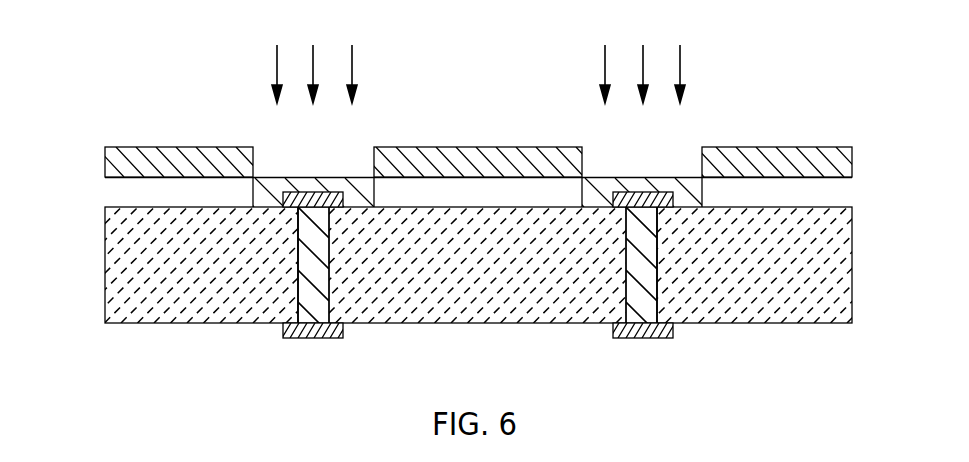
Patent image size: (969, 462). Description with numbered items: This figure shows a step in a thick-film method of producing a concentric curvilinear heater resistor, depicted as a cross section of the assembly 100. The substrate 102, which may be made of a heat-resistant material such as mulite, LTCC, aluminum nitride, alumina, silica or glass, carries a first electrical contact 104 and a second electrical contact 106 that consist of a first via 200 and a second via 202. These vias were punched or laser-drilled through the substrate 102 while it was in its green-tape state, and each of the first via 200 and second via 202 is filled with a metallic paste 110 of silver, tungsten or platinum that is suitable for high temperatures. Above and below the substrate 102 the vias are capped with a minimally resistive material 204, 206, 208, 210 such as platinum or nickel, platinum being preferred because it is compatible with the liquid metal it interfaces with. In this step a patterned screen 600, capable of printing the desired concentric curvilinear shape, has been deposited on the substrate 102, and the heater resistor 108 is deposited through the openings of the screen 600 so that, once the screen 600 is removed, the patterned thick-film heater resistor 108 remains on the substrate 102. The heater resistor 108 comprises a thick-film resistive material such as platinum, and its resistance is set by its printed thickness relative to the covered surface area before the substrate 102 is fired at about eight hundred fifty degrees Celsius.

The electronic device structure 100 is at (199, 105).
The substrate 102 is at (105, 270).
The first electrical contact 104 is at (285, 260).
The second electrical contact 106 is at (670, 276).
The heater resistor 108 is at (360, 178).
The metallic paste 110 is at (314, 280).
The first via 200 is at (330, 310).
The second via 202 is at (627, 290).
The minimally resistive material 204 is at (303, 192).
The minimally resistive material 206 is at (312, 338).
The minimally resistive material 208 is at (632, 192).
The minimally resistive material 210 is at (642, 338).
The patterned screen 600 is at (143, 147).